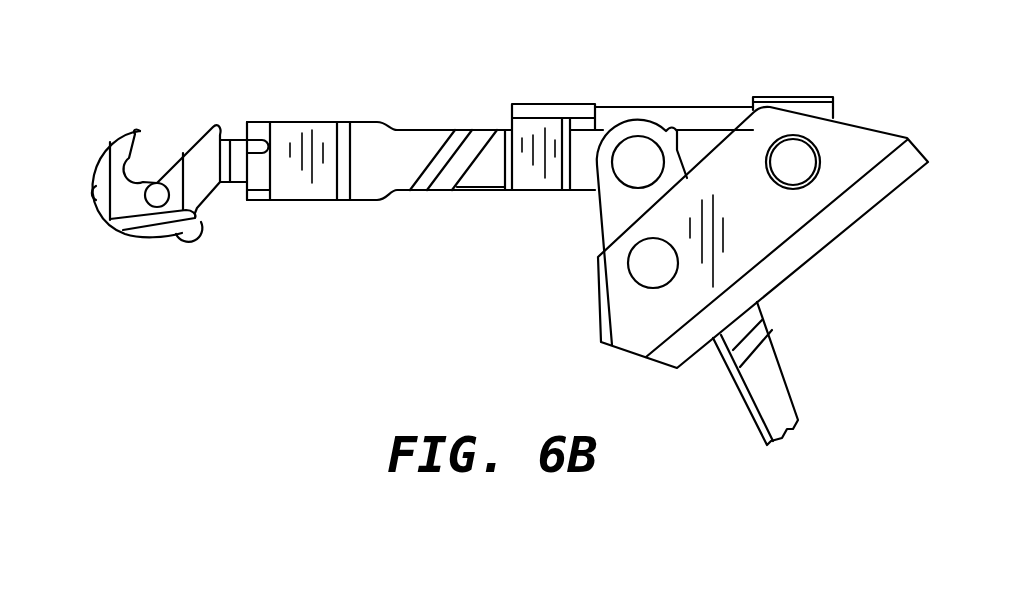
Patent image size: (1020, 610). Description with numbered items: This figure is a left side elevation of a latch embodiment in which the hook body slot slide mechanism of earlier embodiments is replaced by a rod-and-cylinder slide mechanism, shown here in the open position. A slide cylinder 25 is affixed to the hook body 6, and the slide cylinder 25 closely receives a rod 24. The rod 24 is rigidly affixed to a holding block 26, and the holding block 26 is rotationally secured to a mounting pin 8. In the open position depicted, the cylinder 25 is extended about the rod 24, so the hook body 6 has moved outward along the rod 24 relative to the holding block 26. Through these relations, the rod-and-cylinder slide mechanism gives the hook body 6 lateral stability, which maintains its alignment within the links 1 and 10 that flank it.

The link 1 is at (800, 243).
The hook body 6 is at (398, 148).
The mounting pin 8 is at (795, 162).
The link 10 is at (618, 213).
The rod 24 is at (680, 118).
The slide cylinder 25 is at (540, 113).
The holding block 26 is at (792, 97).